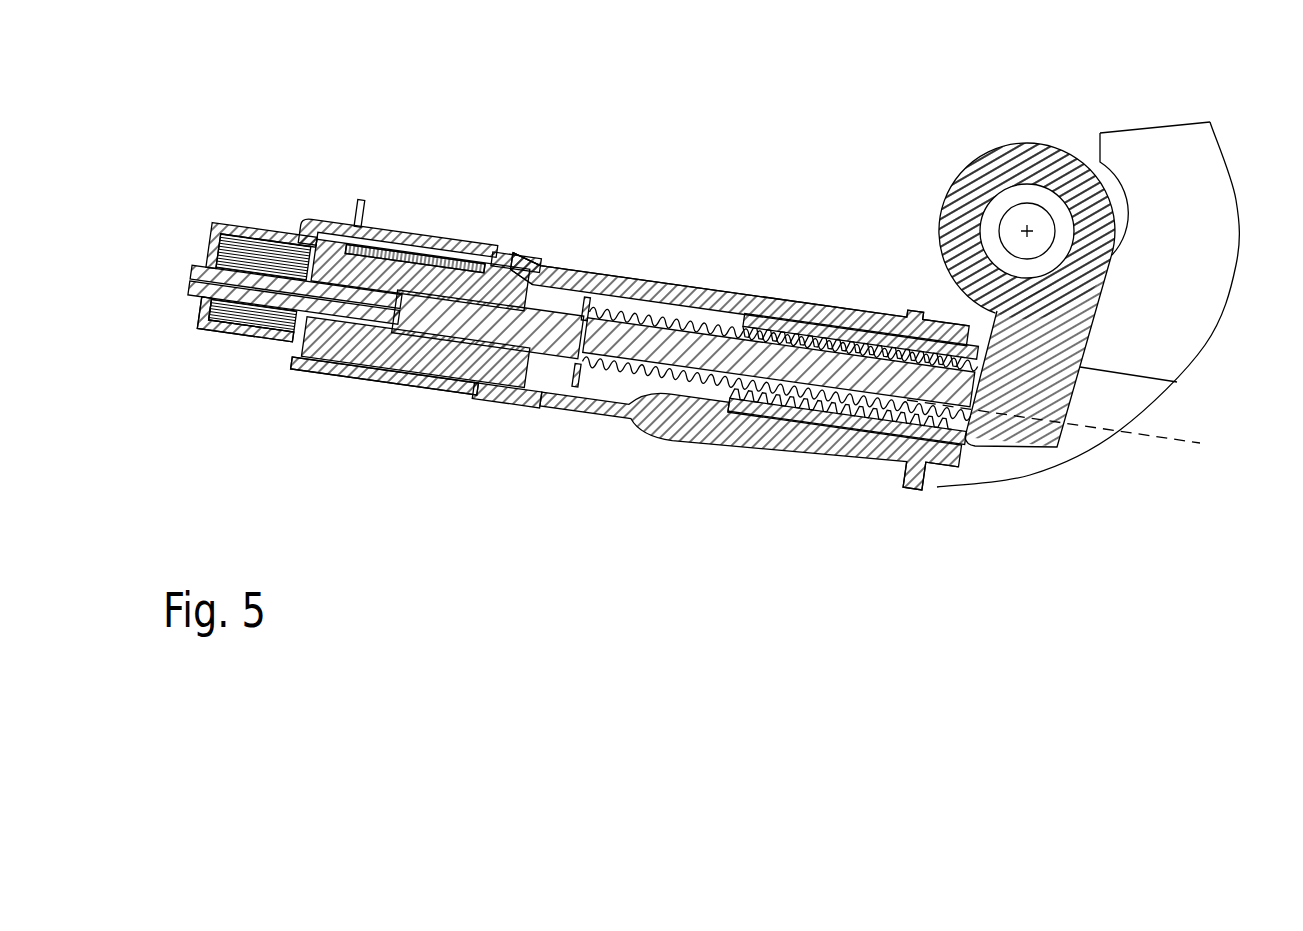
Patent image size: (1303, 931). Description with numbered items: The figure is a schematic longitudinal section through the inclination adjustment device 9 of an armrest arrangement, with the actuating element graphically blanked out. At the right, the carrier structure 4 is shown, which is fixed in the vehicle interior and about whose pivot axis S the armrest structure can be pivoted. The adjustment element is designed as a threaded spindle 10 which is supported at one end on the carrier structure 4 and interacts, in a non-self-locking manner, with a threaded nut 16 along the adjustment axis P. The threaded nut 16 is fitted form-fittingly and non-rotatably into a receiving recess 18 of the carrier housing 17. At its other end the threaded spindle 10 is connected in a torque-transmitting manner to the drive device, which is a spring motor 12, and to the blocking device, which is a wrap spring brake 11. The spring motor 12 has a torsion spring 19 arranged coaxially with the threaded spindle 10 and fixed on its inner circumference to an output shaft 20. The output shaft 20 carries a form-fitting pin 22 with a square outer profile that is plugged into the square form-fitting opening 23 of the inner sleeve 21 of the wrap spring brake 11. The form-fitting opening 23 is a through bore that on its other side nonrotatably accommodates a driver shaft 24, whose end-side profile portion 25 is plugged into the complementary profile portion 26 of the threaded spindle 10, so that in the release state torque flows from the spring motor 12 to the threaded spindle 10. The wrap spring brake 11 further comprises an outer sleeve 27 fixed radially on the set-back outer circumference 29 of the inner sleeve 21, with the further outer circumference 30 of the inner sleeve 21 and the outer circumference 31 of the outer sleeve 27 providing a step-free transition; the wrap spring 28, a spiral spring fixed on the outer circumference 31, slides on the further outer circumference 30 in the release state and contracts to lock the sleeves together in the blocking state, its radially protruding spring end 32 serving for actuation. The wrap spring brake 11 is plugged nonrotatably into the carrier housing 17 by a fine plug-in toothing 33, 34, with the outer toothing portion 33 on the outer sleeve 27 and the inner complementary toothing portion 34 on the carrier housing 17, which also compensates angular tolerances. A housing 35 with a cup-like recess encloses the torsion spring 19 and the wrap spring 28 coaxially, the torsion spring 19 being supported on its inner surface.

The carrier structure 4 is at (1000, 434).
The inclination adjustment device 9 is at (504, 120).
The threaded spindle 10 is at (834, 428).
The wrap spring brake 11 is at (388, 460).
The spring motor 12 is at (223, 392).
The threaded nut 16 is at (842, 330).
The carrier housing 17 is at (728, 292).
The receiving recess 18 is at (924, 452).
The torsion spring 19 is at (213, 327).
The output shaft 20 is at (197, 266).
The inner sleeve 21 is at (403, 388).
The form-fitting pin 22 is at (306, 358).
The form-fitting opening 23 is at (331, 373).
The driver shaft 24 is at (556, 296).
The profile portion 25 is at (603, 372).
The complementary profile portion 26 is at (660, 366).
The outer sleeve 27 is at (478, 238).
The wrap spring 28 is at (398, 235).
The outer circumference 29 is at (478, 398).
The further outer circumference 30 is at (352, 216).
The outer circumference 31 is at (437, 240).
The spring end 32 is at (362, 198).
The toothing portion 33 is at (522, 238).
The complementary toothing portion 34 is at (522, 238).
The housing 35 is at (262, 222).
The pivot axis S is at (1027, 231).
The adjustment axis P is at (1150, 441).